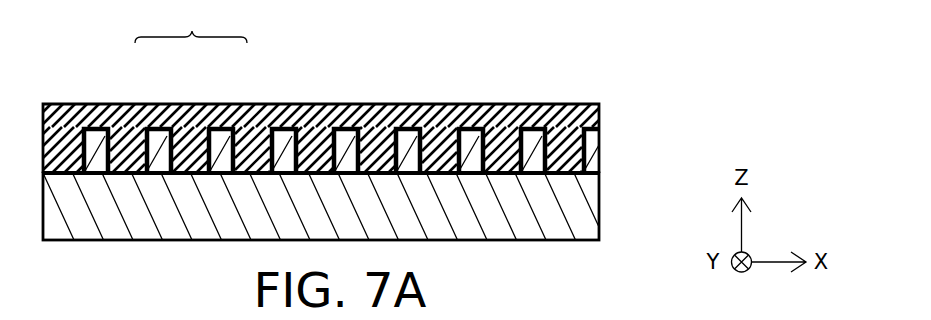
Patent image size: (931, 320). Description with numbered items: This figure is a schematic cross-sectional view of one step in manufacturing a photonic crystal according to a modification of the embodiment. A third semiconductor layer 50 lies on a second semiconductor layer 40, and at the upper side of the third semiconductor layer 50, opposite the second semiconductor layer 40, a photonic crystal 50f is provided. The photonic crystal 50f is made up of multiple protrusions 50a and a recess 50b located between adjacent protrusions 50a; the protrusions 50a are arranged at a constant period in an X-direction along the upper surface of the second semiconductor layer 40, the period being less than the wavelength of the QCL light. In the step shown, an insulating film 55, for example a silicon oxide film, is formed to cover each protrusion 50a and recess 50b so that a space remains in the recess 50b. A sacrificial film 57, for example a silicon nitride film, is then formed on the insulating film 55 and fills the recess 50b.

The second semiconductor layer 40 is at (591, 209).
The third semiconductor layer 50 is at (350, 88).
The protrusion 50a is at (161, 125).
The recess 50b is at (200, 126).
The photonic crystal 50f is at (191, 23).
The insulating film 55 is at (495, 139).
The sacrificial film 57 is at (318, 120).